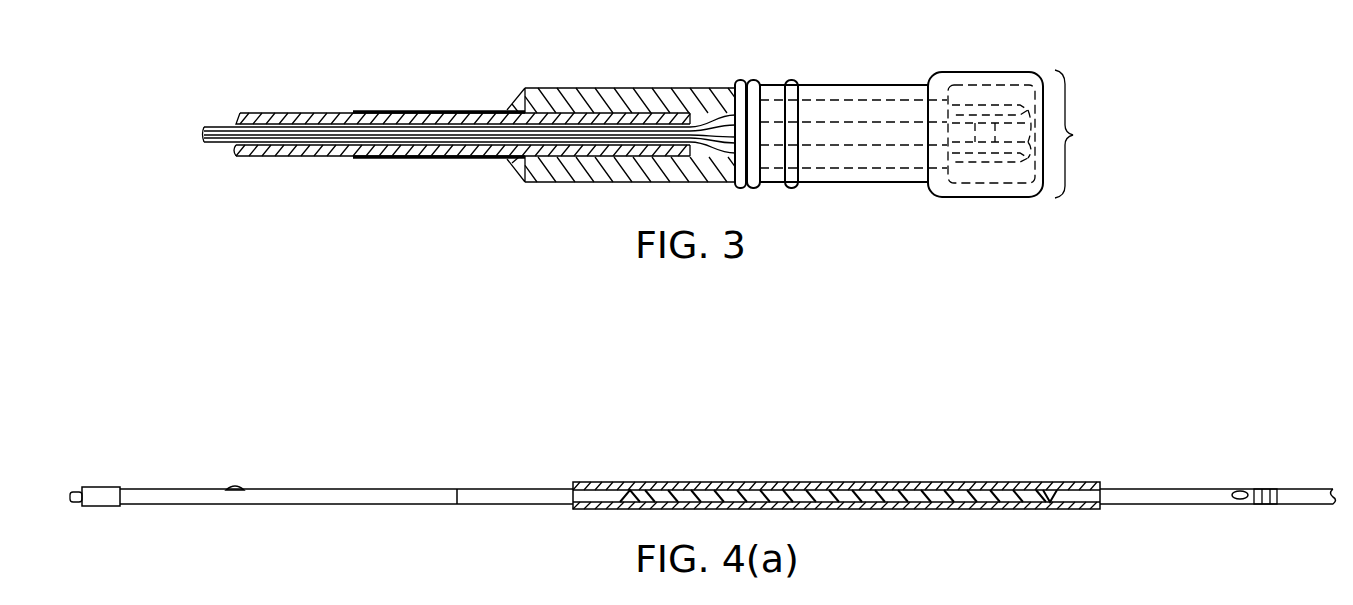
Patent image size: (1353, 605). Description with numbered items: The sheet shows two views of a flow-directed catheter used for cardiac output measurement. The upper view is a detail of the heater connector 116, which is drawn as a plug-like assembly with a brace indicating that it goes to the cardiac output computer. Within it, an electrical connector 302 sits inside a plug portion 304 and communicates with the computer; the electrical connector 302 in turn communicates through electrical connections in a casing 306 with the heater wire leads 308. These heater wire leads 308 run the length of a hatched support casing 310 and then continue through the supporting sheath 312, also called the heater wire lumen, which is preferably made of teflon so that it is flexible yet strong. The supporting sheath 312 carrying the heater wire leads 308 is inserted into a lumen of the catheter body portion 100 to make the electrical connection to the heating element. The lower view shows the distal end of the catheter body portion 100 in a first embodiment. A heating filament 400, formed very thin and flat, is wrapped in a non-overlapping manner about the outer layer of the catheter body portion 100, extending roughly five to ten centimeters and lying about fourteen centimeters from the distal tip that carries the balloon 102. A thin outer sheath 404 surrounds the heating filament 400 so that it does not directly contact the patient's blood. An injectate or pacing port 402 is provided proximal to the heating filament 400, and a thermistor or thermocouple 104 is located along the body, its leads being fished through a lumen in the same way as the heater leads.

In FIG. 3, the heater connector 116 is at (1038, 66).
In FIG. 3, the electrical connector 302 is at (995, 160).
In FIG. 3, the plug portion 304 is at (935, 197).
In FIG. 3, the casing 306 is at (862, 182).
In FIG. 3, the heater wire leads 308 is at (652, 132).
In FIG. 3, the support casing 310 is at (597, 175).
In FIG. 3, the supporting sheath 312 is at (323, 147).
The catheter body portion 100 is at (1288, 486).
The balloon 102 is at (102, 506).
The thermistor or thermocouple 104 is at (238, 488).
The heating filament 400 is at (878, 488).
The injectate or pacing port 402 is at (1242, 490).
The outer sheath 404 is at (667, 482).